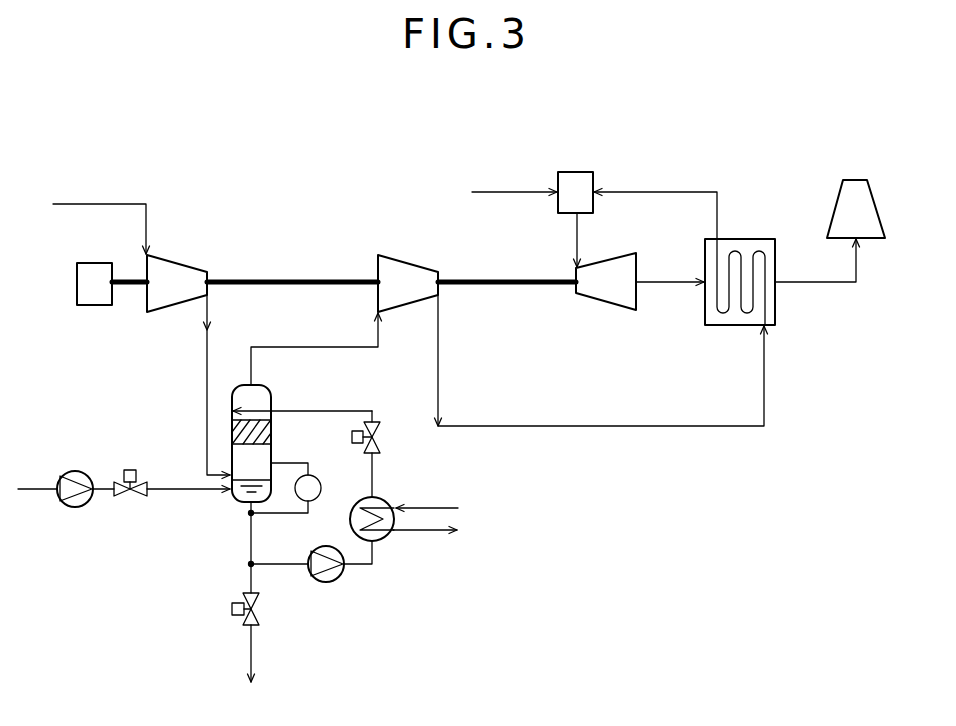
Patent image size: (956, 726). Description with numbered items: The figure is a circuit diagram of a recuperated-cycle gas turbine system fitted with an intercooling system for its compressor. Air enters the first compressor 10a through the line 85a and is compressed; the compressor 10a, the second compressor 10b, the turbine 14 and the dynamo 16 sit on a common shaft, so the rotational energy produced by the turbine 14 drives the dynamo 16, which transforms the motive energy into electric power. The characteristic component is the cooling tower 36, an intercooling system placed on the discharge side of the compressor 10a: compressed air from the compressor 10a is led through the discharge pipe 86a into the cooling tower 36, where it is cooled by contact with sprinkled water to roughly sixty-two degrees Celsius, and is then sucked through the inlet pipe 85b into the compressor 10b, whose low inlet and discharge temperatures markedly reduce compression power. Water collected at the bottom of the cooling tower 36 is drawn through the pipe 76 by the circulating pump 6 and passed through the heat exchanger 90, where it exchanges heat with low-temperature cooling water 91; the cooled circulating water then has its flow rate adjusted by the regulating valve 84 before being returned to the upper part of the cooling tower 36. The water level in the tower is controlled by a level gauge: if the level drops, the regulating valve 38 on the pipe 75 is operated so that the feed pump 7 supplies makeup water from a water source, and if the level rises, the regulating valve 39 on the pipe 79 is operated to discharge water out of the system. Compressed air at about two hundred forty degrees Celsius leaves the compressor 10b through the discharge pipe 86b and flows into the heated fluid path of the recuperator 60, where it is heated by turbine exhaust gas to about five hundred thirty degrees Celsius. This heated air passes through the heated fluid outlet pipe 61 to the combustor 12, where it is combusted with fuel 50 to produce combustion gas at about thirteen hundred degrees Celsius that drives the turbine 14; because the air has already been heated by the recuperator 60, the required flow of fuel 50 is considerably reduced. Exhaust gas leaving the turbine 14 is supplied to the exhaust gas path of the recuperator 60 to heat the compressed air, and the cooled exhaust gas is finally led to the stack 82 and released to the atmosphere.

The circulating pump 6 is at (328, 582).
The feed pump 7 is at (76, 508).
The compressor 10a is at (186, 266).
The compressor 10b is at (400, 261).
The combustor 12 is at (577, 172).
The turbine 14 is at (608, 302).
The dynamo 16 is at (96, 306).
The cooling tower 36 is at (272, 392).
The regulating valve 38 is at (131, 470).
The regulating valve 39 is at (231, 609).
The fuel 50 is at (512, 192).
The recuperator 60 is at (754, 239).
The heated fluid outlet pipe 61 is at (655, 192).
The pipe 75 is at (178, 490).
The pipe 76 is at (286, 565).
The pipe 79 is at (256, 655).
The stack 82 is at (856, 180).
The regulating valve 84 is at (351, 437).
The air intake line 85a is at (97, 204).
The inlet pipe 85b is at (302, 347).
The discharge pipe 86a is at (206, 386).
The discharge pipe 86b is at (440, 354).
The heat exchanger 90 is at (383, 498).
The cooling water 91 is at (446, 507).